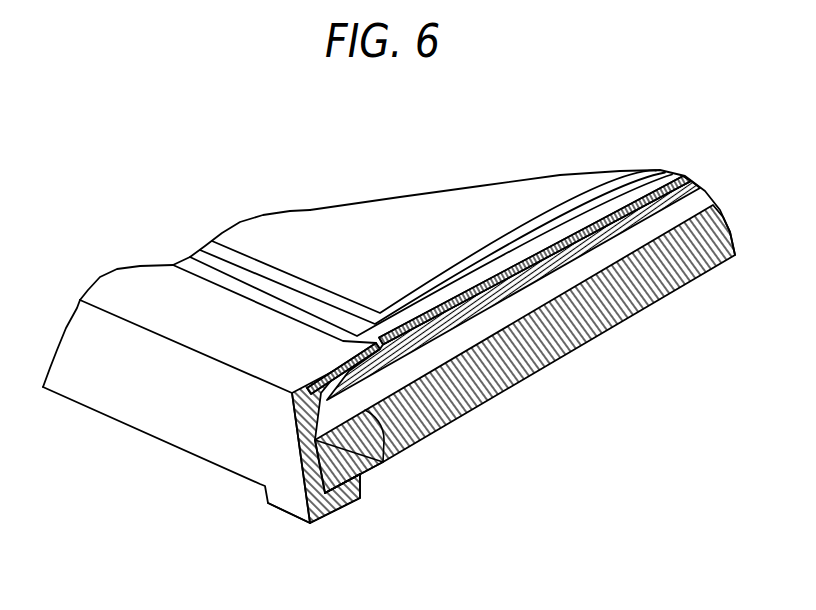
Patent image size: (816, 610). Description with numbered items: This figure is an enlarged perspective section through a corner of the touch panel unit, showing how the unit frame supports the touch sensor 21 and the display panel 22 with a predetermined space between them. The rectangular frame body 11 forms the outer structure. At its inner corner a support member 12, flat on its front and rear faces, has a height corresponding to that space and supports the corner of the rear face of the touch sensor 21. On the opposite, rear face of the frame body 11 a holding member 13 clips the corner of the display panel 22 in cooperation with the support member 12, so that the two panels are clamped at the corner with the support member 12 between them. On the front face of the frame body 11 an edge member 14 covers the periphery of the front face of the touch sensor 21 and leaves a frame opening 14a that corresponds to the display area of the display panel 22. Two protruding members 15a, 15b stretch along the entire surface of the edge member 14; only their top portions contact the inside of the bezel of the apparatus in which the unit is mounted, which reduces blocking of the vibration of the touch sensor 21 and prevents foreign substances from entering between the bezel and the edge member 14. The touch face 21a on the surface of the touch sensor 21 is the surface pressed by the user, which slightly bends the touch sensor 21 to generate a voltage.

The frame body 11 is at (150, 402).
The support member 12 is at (382, 460).
The holding member 13 is at (335, 508).
The edge member 14 is at (150, 287).
The frame opening 14a is at (307, 278).
The protruding member 15a is at (205, 278).
The protruding member 15b is at (260, 277).
The touch sensor 21 is at (493, 300).
The touch face 21a is at (498, 200).
The display panel 22 is at (640, 300).